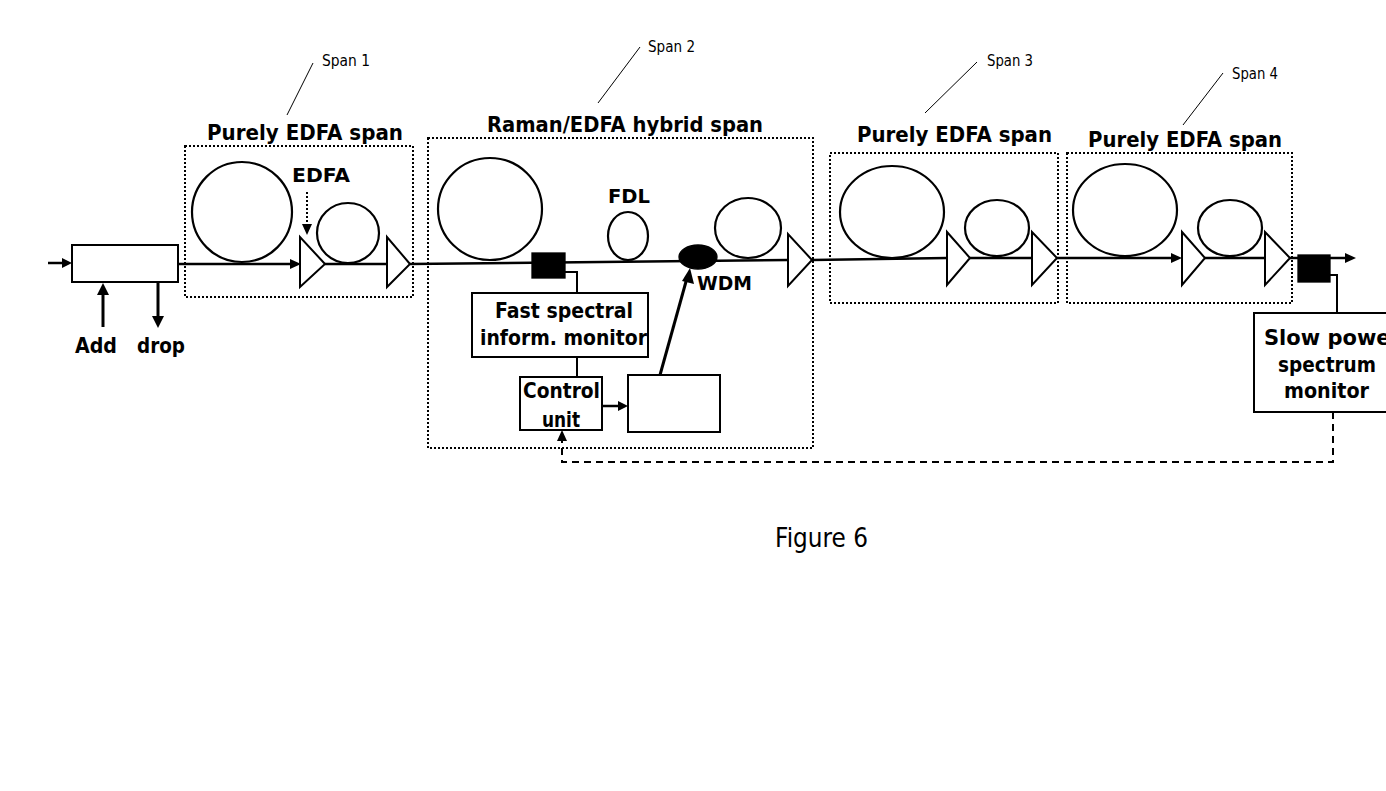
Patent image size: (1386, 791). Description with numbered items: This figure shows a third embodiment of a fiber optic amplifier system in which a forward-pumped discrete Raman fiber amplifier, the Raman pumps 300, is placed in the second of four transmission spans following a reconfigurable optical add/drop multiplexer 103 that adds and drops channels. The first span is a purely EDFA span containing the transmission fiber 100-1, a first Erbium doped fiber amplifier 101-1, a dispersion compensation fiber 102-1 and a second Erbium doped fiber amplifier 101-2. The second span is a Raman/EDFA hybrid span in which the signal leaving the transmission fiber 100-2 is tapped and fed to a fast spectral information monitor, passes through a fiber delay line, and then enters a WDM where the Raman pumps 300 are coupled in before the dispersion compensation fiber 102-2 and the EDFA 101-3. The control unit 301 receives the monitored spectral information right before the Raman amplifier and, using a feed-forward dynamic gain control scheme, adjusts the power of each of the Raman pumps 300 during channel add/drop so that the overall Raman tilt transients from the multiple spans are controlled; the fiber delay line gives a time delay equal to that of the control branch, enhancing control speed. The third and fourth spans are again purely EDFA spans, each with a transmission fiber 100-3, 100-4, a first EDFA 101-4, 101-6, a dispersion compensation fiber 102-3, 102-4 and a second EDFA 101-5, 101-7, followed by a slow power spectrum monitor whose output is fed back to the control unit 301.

The transmission fiber 100-1 is at (203, 170).
The transmission fiber section 100-2 is at (520, 170).
The transmission fiber 100-3 is at (910, 168).
The transmission fiber 100-4 is at (1160, 173).
The Erbium doped fiber amplifier 101-1 is at (300, 285).
The Erbium doped fiber amplifier 101-2 is at (387, 285).
The Erbium doped fiber amplifier 101-3 is at (785, 287).
The Erbium doped fiber amplifier 101-4 is at (947, 278).
The Erbium doped fiber amplifier 101-5 is at (1032, 285).
The Erbium doped fiber amplifier 101-6 is at (1182, 285).
The Erbium doped fiber amplifier 101-7 is at (1265, 285).
The dispersion compensation fiber 102-1 is at (355, 200).
The dispersion compensation fiber 102-2 is at (748, 203).
The dispersion compensation fiber 102-3 is at (992, 203).
The dispersion compensation fiber 102-4 is at (1241, 211).
The reconfigurable optical add/drop multiplexer 103 is at (123, 237).
The Raman pumps 300 is at (720, 413).
The control unit 301 is at (620, 293).